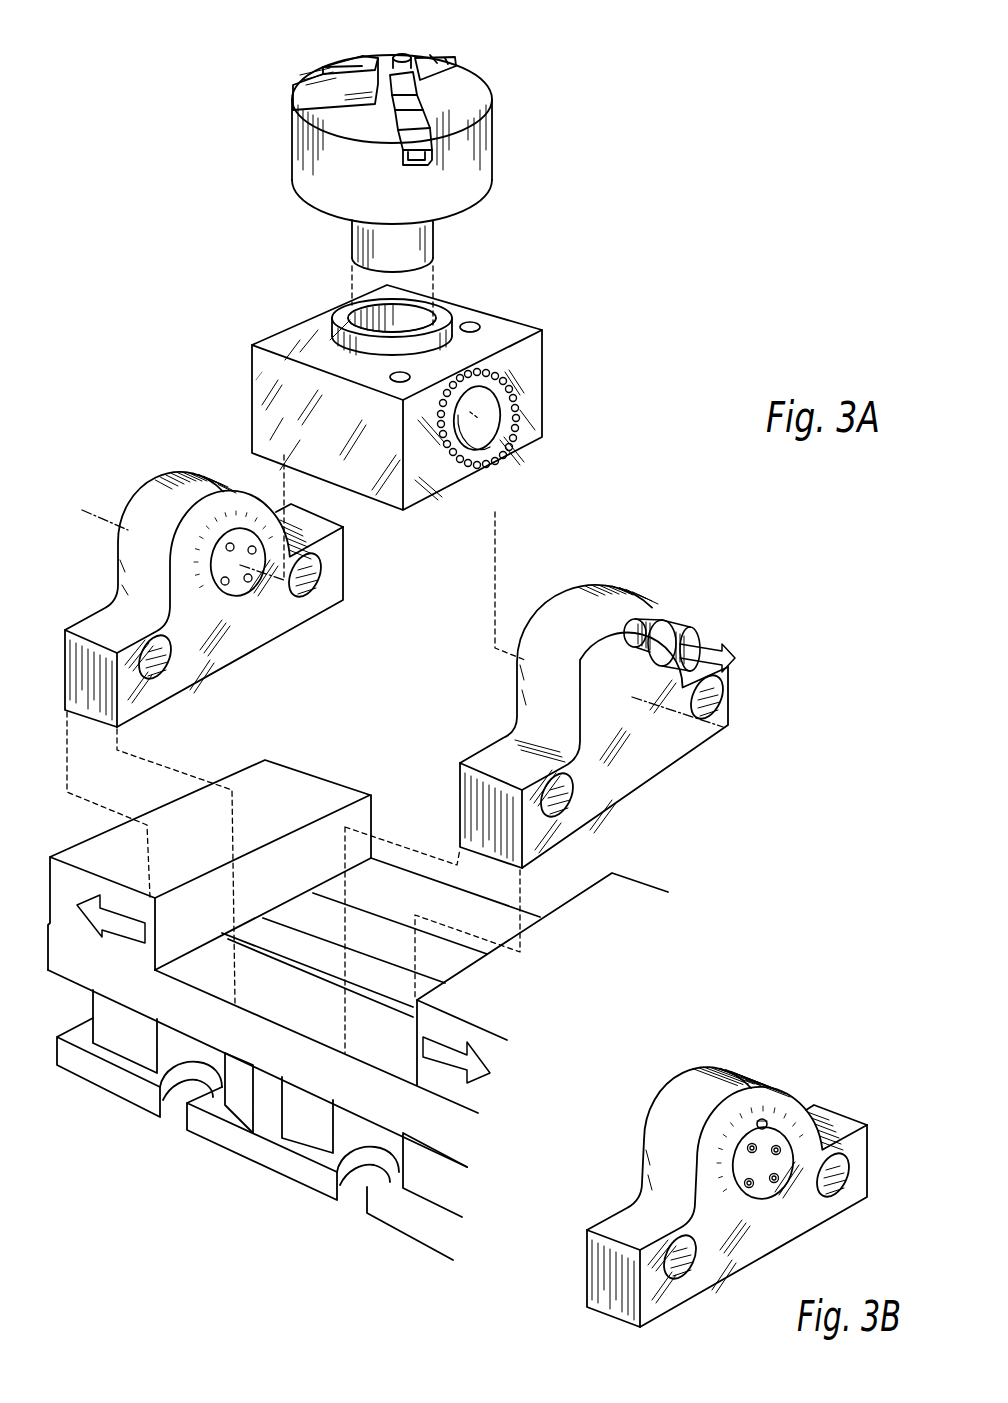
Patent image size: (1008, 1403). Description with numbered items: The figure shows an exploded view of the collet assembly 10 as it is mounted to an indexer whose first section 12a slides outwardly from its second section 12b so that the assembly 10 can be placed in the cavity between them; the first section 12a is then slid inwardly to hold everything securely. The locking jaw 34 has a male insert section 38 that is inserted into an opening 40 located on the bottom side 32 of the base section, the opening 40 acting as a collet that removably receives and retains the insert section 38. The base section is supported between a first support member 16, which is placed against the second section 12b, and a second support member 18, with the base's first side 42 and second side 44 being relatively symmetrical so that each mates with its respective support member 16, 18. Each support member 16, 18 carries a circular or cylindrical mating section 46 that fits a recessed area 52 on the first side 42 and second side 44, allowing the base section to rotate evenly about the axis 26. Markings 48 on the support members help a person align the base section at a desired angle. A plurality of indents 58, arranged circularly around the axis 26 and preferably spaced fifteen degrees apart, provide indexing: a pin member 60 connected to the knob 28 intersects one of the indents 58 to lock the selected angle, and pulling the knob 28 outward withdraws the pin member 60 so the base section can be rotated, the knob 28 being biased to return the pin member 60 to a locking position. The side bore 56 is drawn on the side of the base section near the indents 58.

In FIG. 3A, the assembly 10 is at (168, 385).
In FIG. 3A, the first section 12a is at (488, 1010).
In FIG. 3A, the second section 12b is at (90, 858).
In FIG. 3A, the first support member 16 is at (597, 699).
In FIG. 3A, the support member 18 is at (204, 571).
In FIG. 3A, the axis 26 is at (728, 738).
In FIG. 3A, the knob 28 is at (648, 628).
In FIG. 3A, the bottom side 32 is at (402, 381).
In FIG. 3A, the locking jaw 34 is at (300, 146).
In FIG. 3A, the male insert section 38 is at (352, 236).
In FIG. 3A, the opening 40 is at (414, 318).
In FIG. 3A, the first side 42 is at (535, 383).
In FIG. 3A, the second side 44 is at (338, 310).
In FIG. 3A, the mating section 46 is at (222, 530).
In FIG. 3B, the mating section 46 is at (820, 1145).
In FIG. 3A, the markings 48 is at (180, 500).
In FIG. 3B, the markings 48 is at (715, 1118).
In FIG. 3A, the recessed area 52 is at (262, 372).
In FIG. 3A, the side bore 56 is at (500, 428).
In FIG. 3A, the indents 58 is at (470, 462).
In FIG. 3B, the pin member 60 is at (763, 1118).